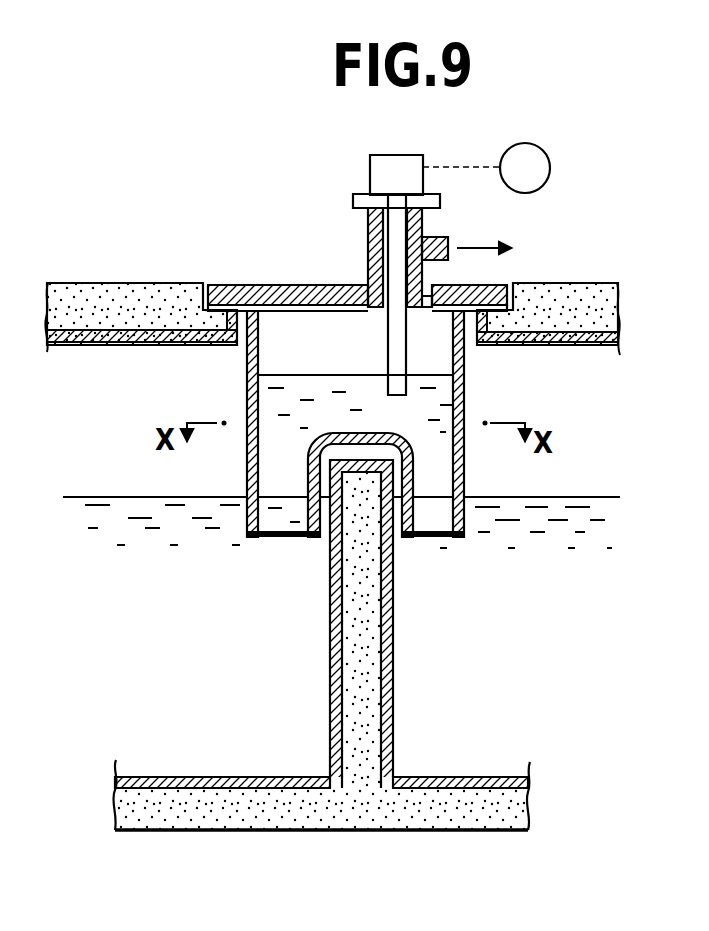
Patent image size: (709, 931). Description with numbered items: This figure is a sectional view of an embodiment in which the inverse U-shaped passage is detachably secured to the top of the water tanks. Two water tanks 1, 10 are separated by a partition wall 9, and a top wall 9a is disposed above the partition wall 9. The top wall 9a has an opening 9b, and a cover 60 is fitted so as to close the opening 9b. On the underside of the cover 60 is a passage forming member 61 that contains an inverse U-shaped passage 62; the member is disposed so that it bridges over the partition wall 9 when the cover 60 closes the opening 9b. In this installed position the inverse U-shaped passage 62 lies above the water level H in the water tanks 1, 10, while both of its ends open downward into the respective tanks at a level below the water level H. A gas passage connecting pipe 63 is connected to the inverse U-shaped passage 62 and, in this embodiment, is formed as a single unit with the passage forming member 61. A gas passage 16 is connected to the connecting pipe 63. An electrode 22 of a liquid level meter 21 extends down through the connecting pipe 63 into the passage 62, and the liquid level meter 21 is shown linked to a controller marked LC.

The water tank 1 is at (240, 758).
The water tank 10 is at (462, 763).
The partition wall 9 is at (378, 684).
The top wall 9a is at (130, 302).
The opening 9b is at (470, 330).
The cover 60 is at (203, 303).
The passage forming member 61 is at (248, 443).
The inverse U-shaped passage 62 is at (300, 393).
The gas passage connecting pipe 63 is at (366, 232).
The gas passage 16 is at (446, 240).
The electrode 22 is at (406, 348).
The liquid level meter 21 is at (417, 165).
The level controller LC is at (486, 168).
The water level H is at (110, 495).